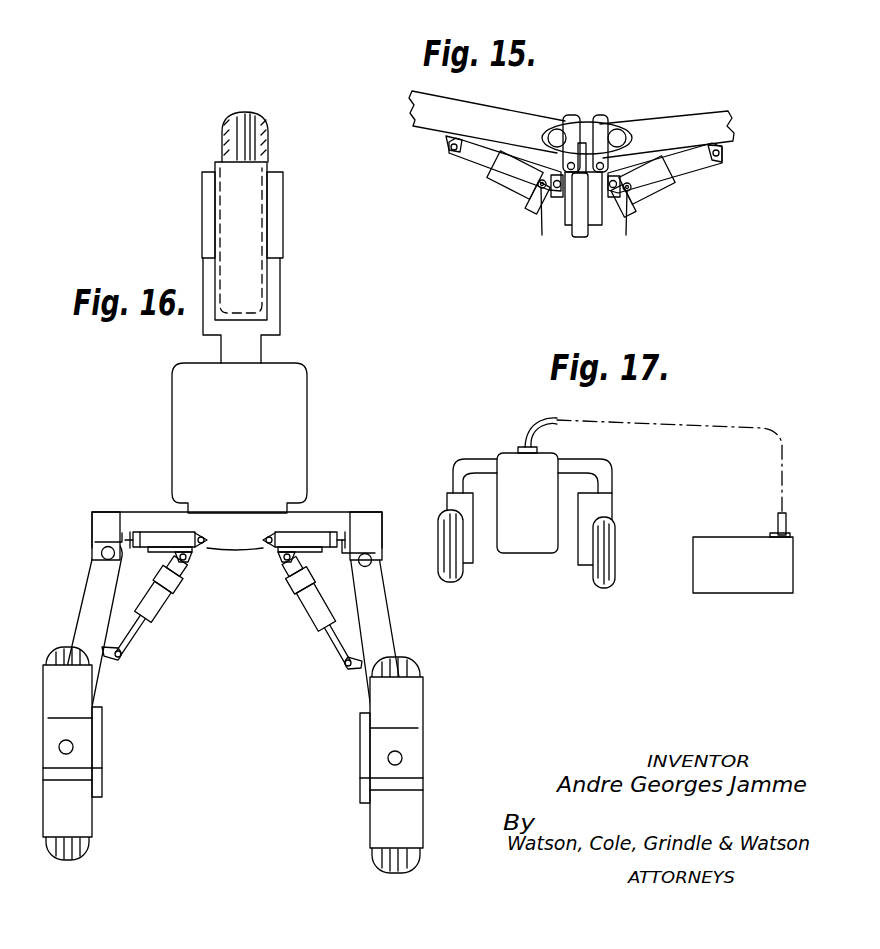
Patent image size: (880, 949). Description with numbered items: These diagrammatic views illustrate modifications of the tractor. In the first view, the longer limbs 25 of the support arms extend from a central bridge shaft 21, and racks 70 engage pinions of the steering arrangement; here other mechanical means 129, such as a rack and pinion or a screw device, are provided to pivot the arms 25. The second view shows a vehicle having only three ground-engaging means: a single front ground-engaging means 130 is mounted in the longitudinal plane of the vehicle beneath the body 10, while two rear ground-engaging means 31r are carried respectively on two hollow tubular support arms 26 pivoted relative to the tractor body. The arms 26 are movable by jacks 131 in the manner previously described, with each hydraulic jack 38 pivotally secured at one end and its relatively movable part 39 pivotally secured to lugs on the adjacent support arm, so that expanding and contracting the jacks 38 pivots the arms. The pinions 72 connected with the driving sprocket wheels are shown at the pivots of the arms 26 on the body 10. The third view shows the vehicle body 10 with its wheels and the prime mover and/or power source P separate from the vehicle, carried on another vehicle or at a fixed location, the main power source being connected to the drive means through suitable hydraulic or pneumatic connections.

In FIG. 15, the longer limb 25 is at (477, 117).
In FIG. 15, the rack 70 is at (598, 118).
In FIG. 15, the bridge shaft 21 is at (592, 225).
In FIG. 15, the mechanical means 129 is at (514, 184).
In FIG. 16, the single front ground-engaging means 130 is at (247, 143).
In FIG. 16, the body 10 is at (278, 448).
In FIG. 17, the body 10 is at (527, 527).
In FIG. 16, the support arm 26 is at (84, 616).
In FIG. 16, the pinion 72 is at (102, 548).
In FIG. 16, the jack 131 is at (172, 532).
In FIG. 16, the hydraulic jack 38 is at (163, 597).
In FIG. 16, the relatively movable part 39 is at (128, 648).
In FIG. 16, the rear ground-engaging means 31r is at (86, 845).
In FIG. 17, the power source P is at (727, 573).